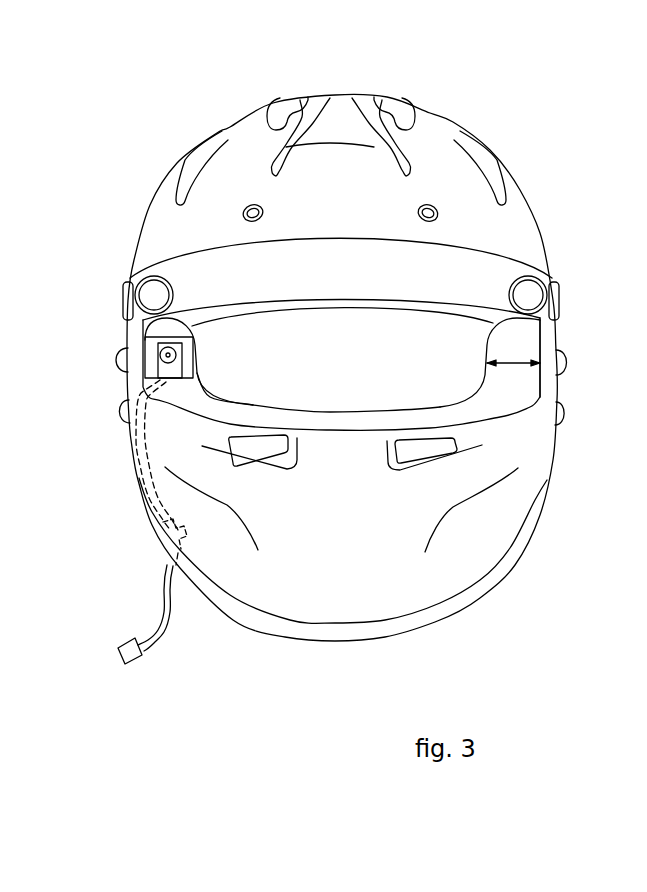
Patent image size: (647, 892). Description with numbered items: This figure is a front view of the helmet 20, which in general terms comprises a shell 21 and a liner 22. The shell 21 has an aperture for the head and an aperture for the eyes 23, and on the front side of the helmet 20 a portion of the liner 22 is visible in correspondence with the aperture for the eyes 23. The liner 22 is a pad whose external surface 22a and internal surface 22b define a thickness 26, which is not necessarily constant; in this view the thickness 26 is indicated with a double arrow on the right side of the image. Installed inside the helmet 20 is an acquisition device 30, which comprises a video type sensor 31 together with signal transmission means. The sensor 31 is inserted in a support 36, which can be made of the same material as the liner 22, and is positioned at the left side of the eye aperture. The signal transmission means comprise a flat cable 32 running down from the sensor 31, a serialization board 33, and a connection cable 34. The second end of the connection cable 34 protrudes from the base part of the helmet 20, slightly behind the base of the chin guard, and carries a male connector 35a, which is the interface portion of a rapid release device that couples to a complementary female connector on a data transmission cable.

The helmet 20 is at (172, 125).
The shell 21 is at (137, 347).
The liner 22 is at (172, 326).
The external surface 22a is at (520, 382).
The internal surface 22b is at (485, 375).
The aperture for the eyes 23 is at (482, 308).
The thickness 26 is at (517, 362).
The acquisition device 30 is at (50, 554).
The sensor 31 is at (168, 363).
The flat cable 32 is at (138, 450).
The serialization board 33 is at (170, 528).
The connection cable 34 is at (167, 607).
The male connector 35a is at (130, 650).
The support 36 is at (153, 360).